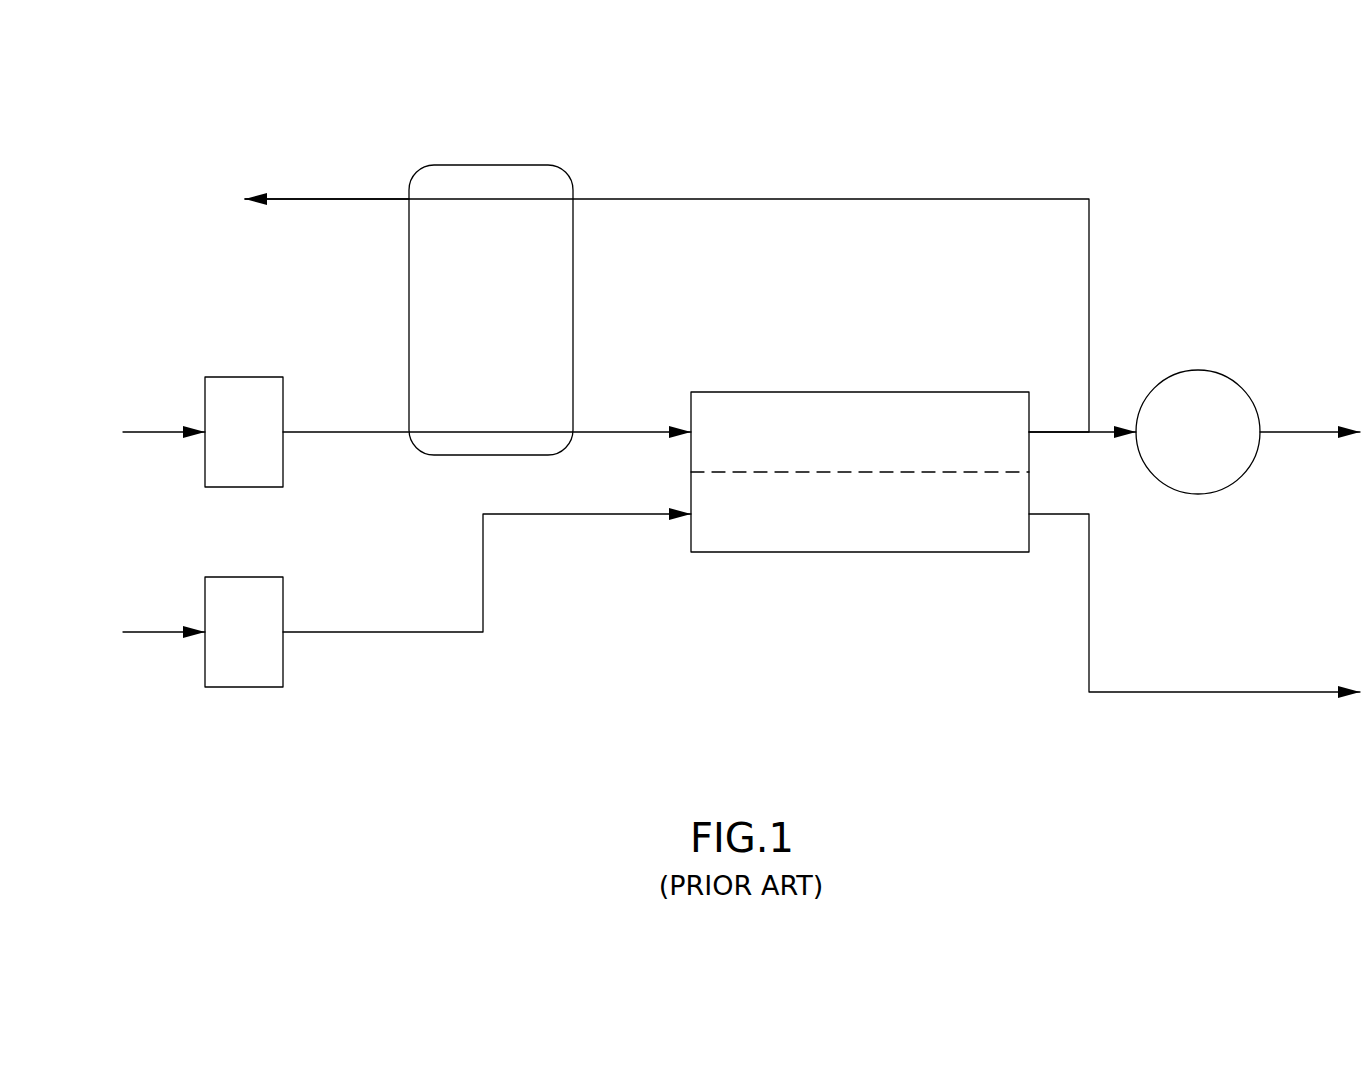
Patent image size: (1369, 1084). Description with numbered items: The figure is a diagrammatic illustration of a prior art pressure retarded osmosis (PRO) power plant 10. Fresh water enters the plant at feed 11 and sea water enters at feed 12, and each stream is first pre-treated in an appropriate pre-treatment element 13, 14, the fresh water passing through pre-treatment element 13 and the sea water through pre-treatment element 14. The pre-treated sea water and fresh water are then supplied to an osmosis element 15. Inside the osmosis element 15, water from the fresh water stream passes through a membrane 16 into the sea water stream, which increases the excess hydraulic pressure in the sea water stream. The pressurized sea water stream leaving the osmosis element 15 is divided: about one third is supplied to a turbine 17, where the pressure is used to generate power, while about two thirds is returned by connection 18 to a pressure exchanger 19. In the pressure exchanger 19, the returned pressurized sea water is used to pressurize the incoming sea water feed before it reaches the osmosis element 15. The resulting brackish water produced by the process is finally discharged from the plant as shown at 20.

The PRO power plant 10 is at (812, 640).
The fresh water feed 11 is at (145, 630).
The sea water feed 12 is at (145, 430).
The pre-treatment element 13 is at (262, 577).
The pre-treatment element 14 is at (262, 377).
The osmosis element 15 is at (762, 392).
The membrane 16 is at (937, 472).
The turbine 17 is at (1180, 372).
The connection 18 is at (745, 198).
The pressure exchanger 19 is at (490, 165).
The brackish water discharge 20 is at (305, 197).